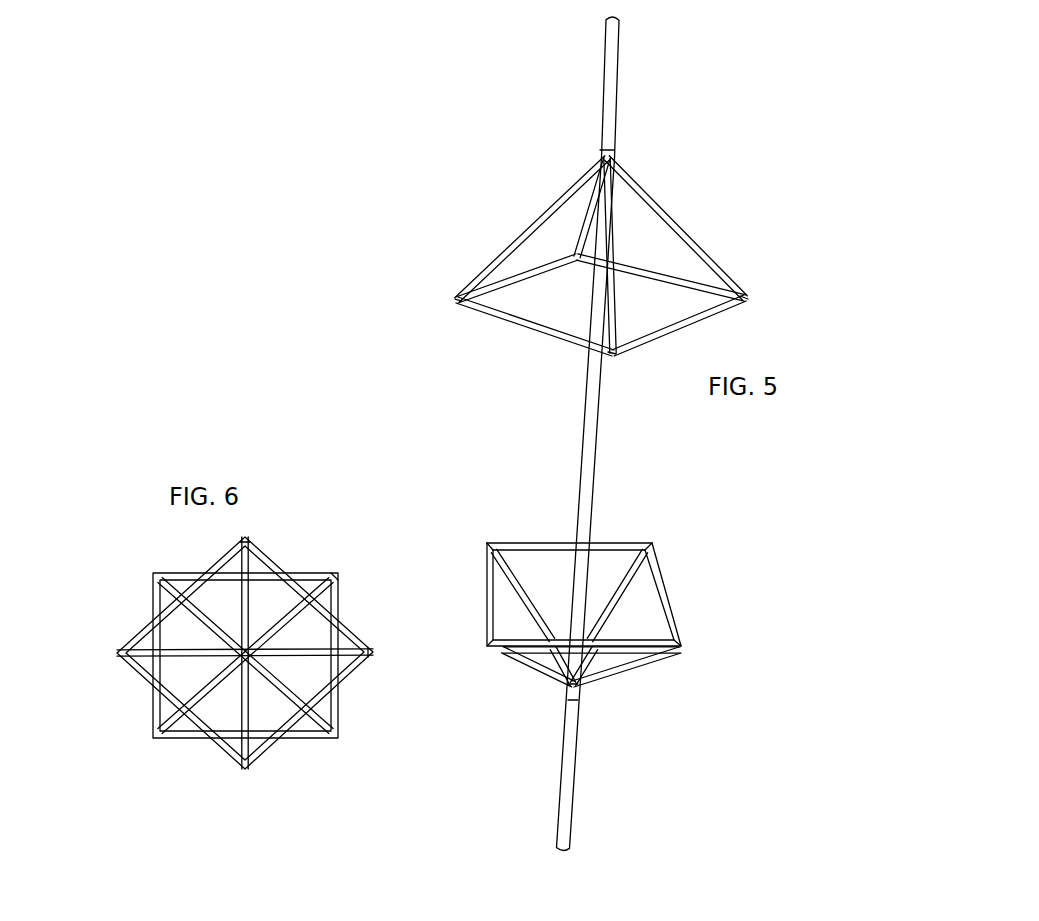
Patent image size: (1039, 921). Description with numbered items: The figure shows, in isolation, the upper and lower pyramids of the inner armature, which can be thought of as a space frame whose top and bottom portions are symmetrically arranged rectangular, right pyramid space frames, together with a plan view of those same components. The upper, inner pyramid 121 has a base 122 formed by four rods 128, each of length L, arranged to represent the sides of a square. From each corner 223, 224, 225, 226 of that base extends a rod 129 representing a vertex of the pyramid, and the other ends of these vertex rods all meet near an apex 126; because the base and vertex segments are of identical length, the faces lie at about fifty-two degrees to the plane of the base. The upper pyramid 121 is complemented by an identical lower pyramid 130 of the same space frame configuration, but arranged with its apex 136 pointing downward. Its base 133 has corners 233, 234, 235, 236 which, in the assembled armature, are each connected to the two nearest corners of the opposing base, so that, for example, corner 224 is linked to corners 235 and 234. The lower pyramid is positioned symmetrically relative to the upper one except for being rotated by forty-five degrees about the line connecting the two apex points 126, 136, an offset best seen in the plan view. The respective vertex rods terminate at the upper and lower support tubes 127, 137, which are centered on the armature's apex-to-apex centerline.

In FIG. 5, the upper inner pyramid 121 is at (296, 279).
In FIG. 5, the base of upper pyramid 122 is at (672, 388).
In FIG. 5, the apex of upper pyramid 126 is at (612, 150).
In FIG. 5, the upper support tube 127 is at (600, 128).
In FIG. 5, the base rod 128 is at (520, 327).
In FIG. 5, the vertex rod 129 is at (683, 230).
In FIG. 5, the lower pyramid 130 is at (445, 599).
In FIG. 5, the base of lower pyramid 133 is at (632, 522).
In FIG. 5, the apex of lower pyramid 136 is at (580, 690).
In FIG. 5, the lower support tube 137 is at (560, 683).
In FIG. 5, the corner of upper pyramid base 223 is at (747, 298).
In FIG. 6, the corner of upper pyramid base 223 is at (338, 573).
In FIG. 5, the corner of upper pyramid base 224 is at (610, 357).
In FIG. 5, the corner of upper pyramid base 225 is at (457, 300).
In FIG. 5, the corner of upper pyramid base 226 is at (540, 267).
In FIG. 5, the corner of lower pyramid base 233 is at (653, 542).
In FIG. 6, the corner of lower pyramid base 233 is at (247, 538).
In FIG. 5, the corner of lower pyramid base 234 is at (683, 645).
In FIG. 6, the corner of lower pyramid base 234 is at (377, 653).
In FIG. 5, the corner of lower pyramid base 235 is at (487, 648).
In FIG. 5, the corner of lower pyramid base 236 is at (487, 545).